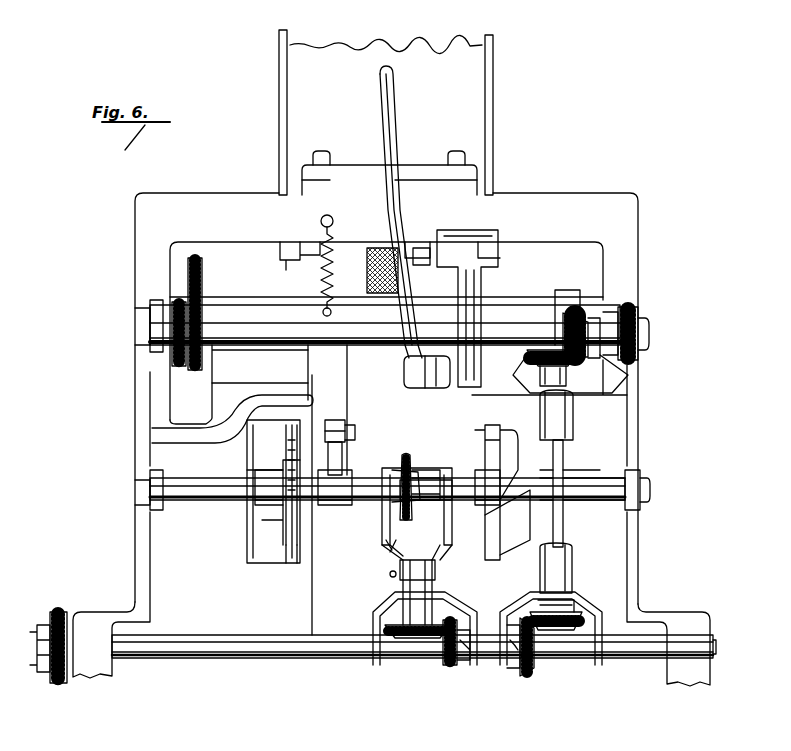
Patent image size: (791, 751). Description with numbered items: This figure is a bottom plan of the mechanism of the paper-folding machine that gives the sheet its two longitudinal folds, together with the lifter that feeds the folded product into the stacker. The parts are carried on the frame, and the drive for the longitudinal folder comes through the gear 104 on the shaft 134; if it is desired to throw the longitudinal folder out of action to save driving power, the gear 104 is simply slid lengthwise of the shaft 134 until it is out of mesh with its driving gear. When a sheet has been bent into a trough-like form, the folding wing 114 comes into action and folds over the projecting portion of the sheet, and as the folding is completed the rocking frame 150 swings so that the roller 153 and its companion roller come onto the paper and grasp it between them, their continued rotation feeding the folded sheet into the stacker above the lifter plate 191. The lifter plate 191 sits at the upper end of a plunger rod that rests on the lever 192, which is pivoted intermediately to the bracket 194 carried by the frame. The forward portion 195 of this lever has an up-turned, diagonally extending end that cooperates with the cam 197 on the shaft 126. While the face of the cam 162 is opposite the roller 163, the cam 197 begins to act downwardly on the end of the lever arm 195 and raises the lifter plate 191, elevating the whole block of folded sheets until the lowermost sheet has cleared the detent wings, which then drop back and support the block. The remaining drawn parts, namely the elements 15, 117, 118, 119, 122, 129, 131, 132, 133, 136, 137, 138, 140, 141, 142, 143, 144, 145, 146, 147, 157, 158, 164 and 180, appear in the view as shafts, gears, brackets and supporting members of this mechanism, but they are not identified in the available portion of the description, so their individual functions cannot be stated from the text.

The frame/housing 15 is at (391, 439).
The gear 104 is at (55, 614).
The folding wing 114 is at (300, 527).
The lower shaft 117 is at (290, 510).
The bracket 118 is at (505, 548).
The bracket arm 119 is at (283, 515).
The bracket with adjusting screw 122 is at (258, 468).
The shaft 126 is at (424, 482).
The toothed member 129 is at (406, 456).
The vertical shaft 131 is at (435, 575).
The bevel gear 132 is at (398, 640).
The bevel gear 133 is at (448, 666).
The shaft 134 is at (652, 662).
The pin 136 is at (392, 560).
The pin 137 is at (396, 537).
The bearing bracket 138 is at (372, 627).
The housing block 140 is at (270, 342).
The bevel gear 141 is at (592, 318).
The bevel gear 142 is at (568, 372).
The vertical shaft 143 is at (566, 450).
The bevel gear 144 is at (576, 632).
The bevel gear 145 is at (528, 668).
The collar 146 is at (605, 356).
The bearing bracket 147 is at (580, 598).
The rocking frame 150 is at (250, 318).
The roller 153 is at (359, 265).
The gear 157 is at (188, 272).
The gear 158 is at (200, 370).
The cam 162 is at (343, 468).
The roller 163 is at (326, 418).
The lever foot 164 is at (405, 372).
The stand 180 is at (386, 112).
The lifter plate 191 is at (413, 247).
The lever 192 is at (386, 131).
The bracket 194 is at (488, 245).
The forward portion of the lever 195 is at (455, 395).
The cam 197 is at (455, 548).